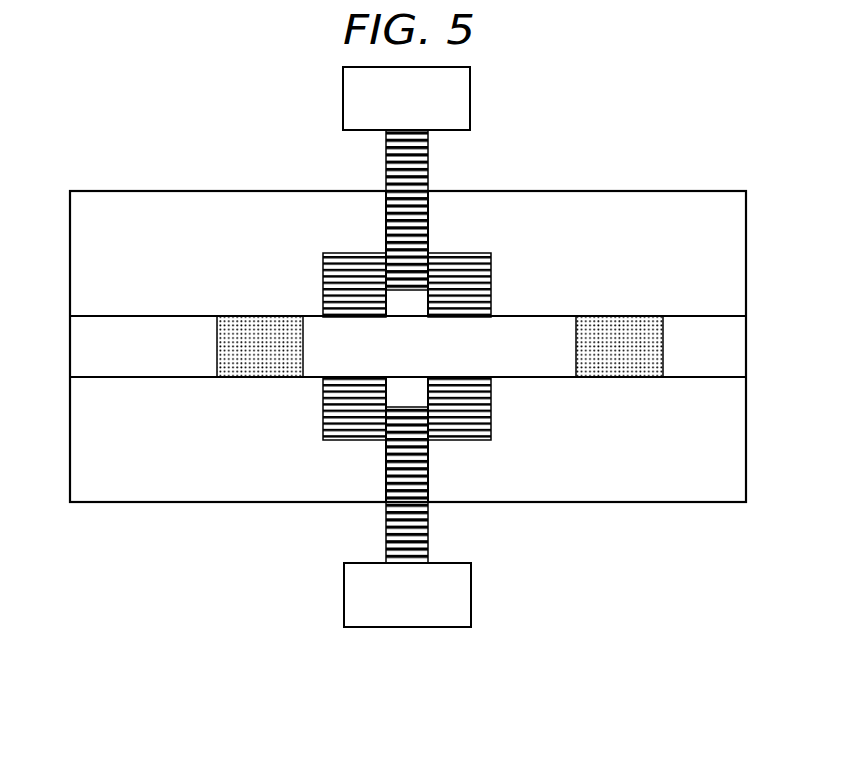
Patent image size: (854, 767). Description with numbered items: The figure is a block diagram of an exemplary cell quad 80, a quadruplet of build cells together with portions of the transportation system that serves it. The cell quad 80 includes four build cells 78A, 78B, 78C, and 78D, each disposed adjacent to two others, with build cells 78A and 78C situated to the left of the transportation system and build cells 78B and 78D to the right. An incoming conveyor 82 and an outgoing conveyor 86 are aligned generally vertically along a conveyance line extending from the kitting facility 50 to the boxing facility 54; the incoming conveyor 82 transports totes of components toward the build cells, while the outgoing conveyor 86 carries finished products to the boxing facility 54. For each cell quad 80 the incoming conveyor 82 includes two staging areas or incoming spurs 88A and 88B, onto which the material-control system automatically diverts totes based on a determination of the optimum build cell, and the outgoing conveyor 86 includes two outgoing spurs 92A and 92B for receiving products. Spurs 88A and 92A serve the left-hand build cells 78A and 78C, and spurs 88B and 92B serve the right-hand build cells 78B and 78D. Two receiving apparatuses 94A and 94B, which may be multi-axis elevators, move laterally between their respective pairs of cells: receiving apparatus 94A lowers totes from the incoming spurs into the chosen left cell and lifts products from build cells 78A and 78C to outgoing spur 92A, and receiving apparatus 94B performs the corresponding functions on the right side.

The kitting facility 50 is at (344, 594).
The boxing facility 54 is at (343, 98).
The cell quad 80 is at (591, 137).
The incoming conveyor 82 is at (428, 523).
The outgoing conveyor 86 is at (428, 223).
The build cell 78A is at (217, 265).
The build cell 78B is at (641, 264).
The build cell 78C is at (217, 452).
The build cell 78D is at (645, 452).
The incoming spur 88A is at (323, 410).
The incoming spur 88B is at (491, 410).
The outgoing spur 92A is at (323, 283).
The outgoing spur 92B is at (491, 285).
The receiving apparatus 94A is at (217, 350).
The receiving apparatus 94B is at (663, 345).